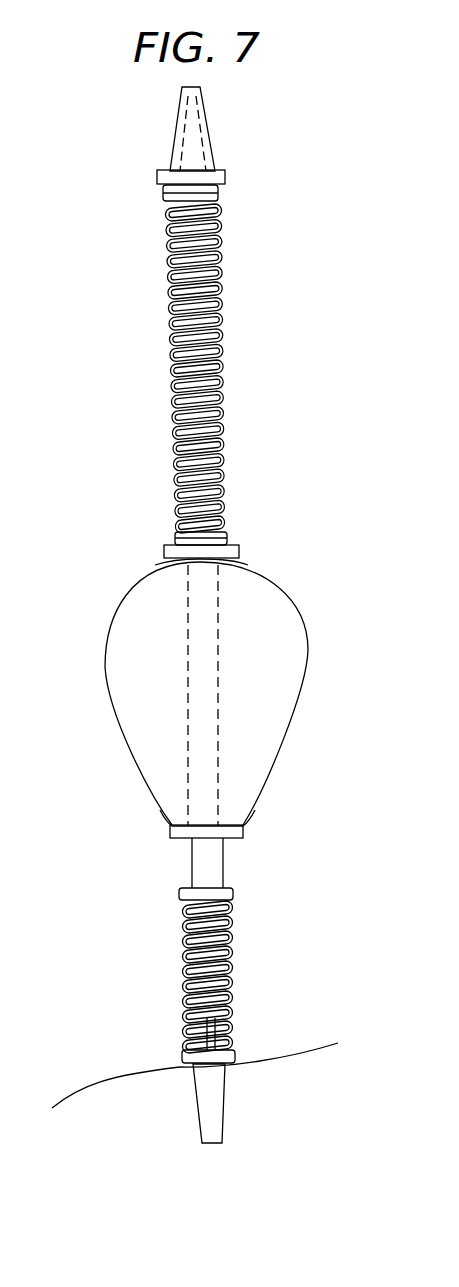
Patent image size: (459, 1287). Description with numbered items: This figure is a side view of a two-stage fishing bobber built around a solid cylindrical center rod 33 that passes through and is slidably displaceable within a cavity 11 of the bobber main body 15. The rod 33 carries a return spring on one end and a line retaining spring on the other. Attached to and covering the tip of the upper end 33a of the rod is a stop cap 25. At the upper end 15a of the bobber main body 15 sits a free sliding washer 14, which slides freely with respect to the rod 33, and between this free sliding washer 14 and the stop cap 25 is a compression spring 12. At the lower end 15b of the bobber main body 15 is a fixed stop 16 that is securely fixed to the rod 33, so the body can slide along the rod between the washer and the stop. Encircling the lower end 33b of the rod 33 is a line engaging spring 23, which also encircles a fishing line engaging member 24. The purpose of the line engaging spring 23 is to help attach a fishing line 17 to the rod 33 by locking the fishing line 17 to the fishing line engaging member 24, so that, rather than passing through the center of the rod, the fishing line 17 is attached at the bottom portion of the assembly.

The cavity 11 is at (205, 683).
The compression spring 12 is at (215, 320).
The free sliding washer 14 is at (233, 545).
The bobber main body 15 is at (275, 622).
The upper end of bobber main body 15a is at (200, 567).
The lower end of bobber main body 15b is at (160, 823).
The fixed stop 16 is at (232, 830).
The fishing line 17 is at (132, 1072).
The line engaging spring 23 is at (232, 980).
The fishing line engaging member 24 is at (227, 1043).
The stop cap 25 is at (202, 137).
The solid cylindrical center rod 33 is at (247, 628).
The upper end of rod 33a is at (210, 270).
The lower end of rod 33b is at (210, 952).